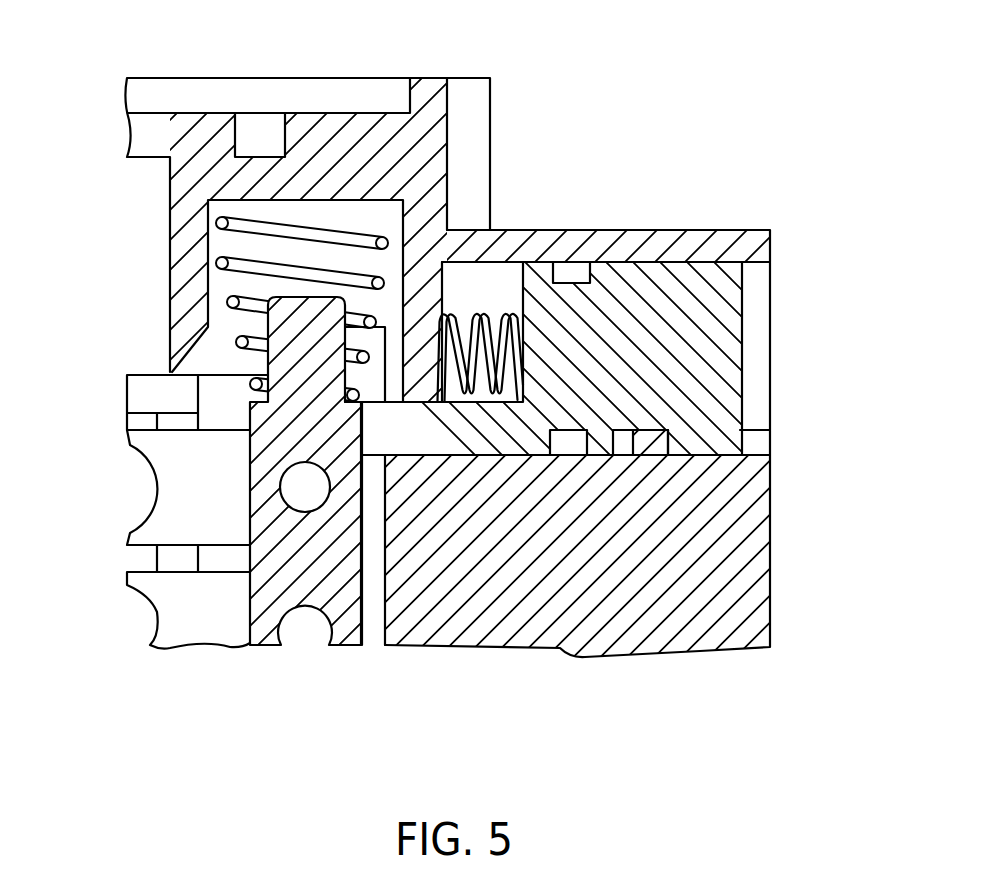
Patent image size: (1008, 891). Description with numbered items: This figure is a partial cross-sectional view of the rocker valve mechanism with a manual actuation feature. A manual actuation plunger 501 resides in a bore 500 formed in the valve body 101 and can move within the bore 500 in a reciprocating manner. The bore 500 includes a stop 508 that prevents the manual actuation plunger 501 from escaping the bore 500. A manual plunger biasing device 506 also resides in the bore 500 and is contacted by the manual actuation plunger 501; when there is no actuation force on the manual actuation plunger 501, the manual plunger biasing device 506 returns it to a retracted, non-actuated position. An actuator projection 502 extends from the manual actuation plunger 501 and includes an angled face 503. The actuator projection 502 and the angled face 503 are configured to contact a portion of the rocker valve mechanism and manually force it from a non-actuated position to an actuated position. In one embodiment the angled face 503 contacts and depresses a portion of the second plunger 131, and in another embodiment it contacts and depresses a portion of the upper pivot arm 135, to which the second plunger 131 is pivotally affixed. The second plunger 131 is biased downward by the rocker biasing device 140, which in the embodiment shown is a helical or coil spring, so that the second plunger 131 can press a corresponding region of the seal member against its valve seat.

The valve body 101 is at (770, 573).
The second plunger 131 is at (272, 637).
The upper pivot arm 135 is at (228, 428).
The rocker biasing device 140 is at (385, 242).
The bore 500 is at (755, 425).
The manual actuation plunger 501 is at (742, 345).
The actuator projection 502 is at (430, 413).
The angled face 503 is at (362, 404).
The manual plunger biasing device 506 is at (482, 317).
The stop 508 is at (650, 435).